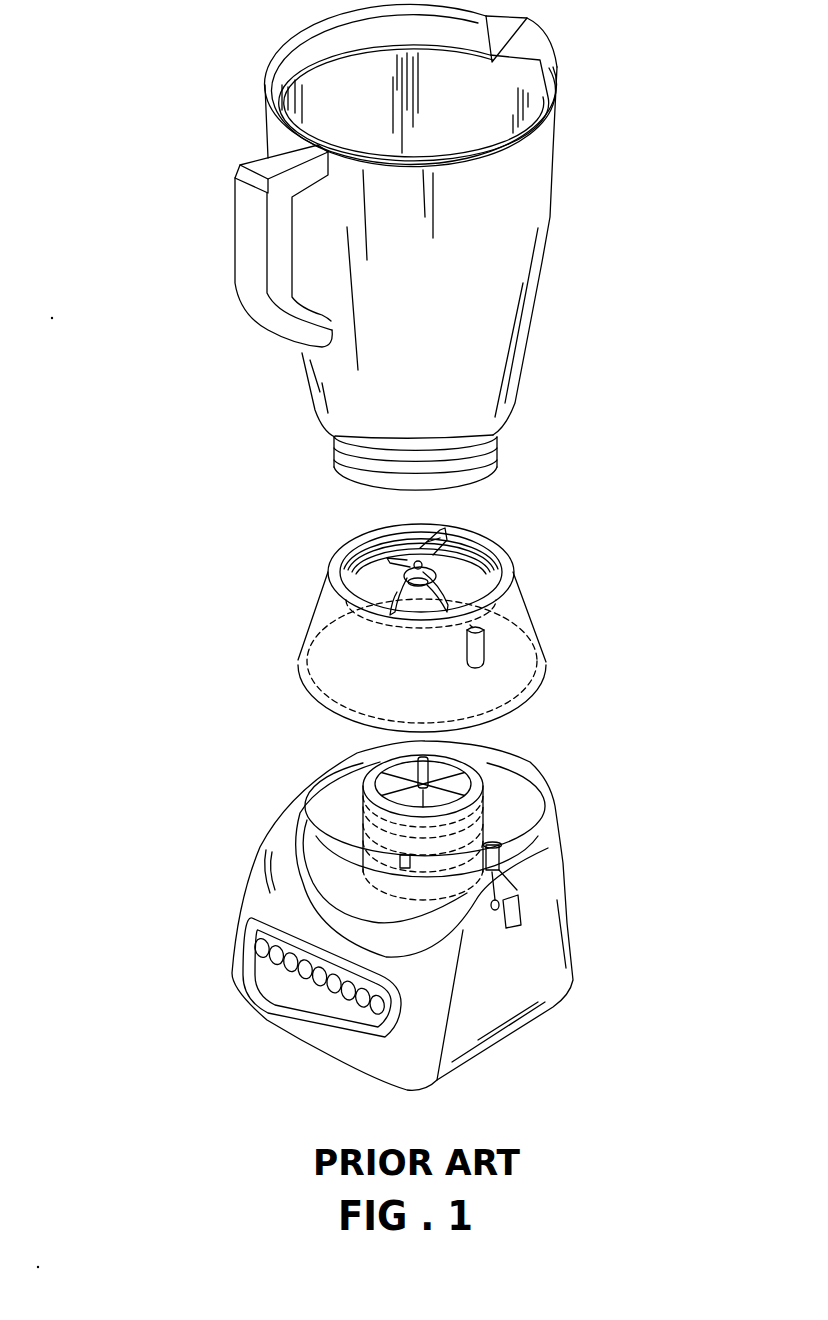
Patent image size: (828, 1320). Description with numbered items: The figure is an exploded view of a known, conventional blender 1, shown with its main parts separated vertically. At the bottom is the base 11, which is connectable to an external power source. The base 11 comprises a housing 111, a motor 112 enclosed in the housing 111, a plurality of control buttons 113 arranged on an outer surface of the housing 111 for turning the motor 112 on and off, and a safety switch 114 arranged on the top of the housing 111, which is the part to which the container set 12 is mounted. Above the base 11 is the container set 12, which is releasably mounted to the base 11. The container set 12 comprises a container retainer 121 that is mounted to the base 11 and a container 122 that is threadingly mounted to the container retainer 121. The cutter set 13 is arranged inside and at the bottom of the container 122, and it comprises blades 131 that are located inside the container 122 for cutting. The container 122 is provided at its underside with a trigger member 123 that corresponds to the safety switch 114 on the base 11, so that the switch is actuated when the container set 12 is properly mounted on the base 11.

The blender 1 is at (142, 83).
The base 11 is at (240, 773).
The housing 111 is at (547, 937).
The motor 112 is at (490, 795).
The control buttons 113 is at (272, 970).
The safety switch 114 is at (548, 831).
The container set 12 is at (200, 213).
The container retainer 121 is at (327, 613).
The container 122 is at (537, 198).
The trigger member 123 is at (542, 622).
The cutter set 13 is at (358, 560).
The blades 131 is at (453, 552).